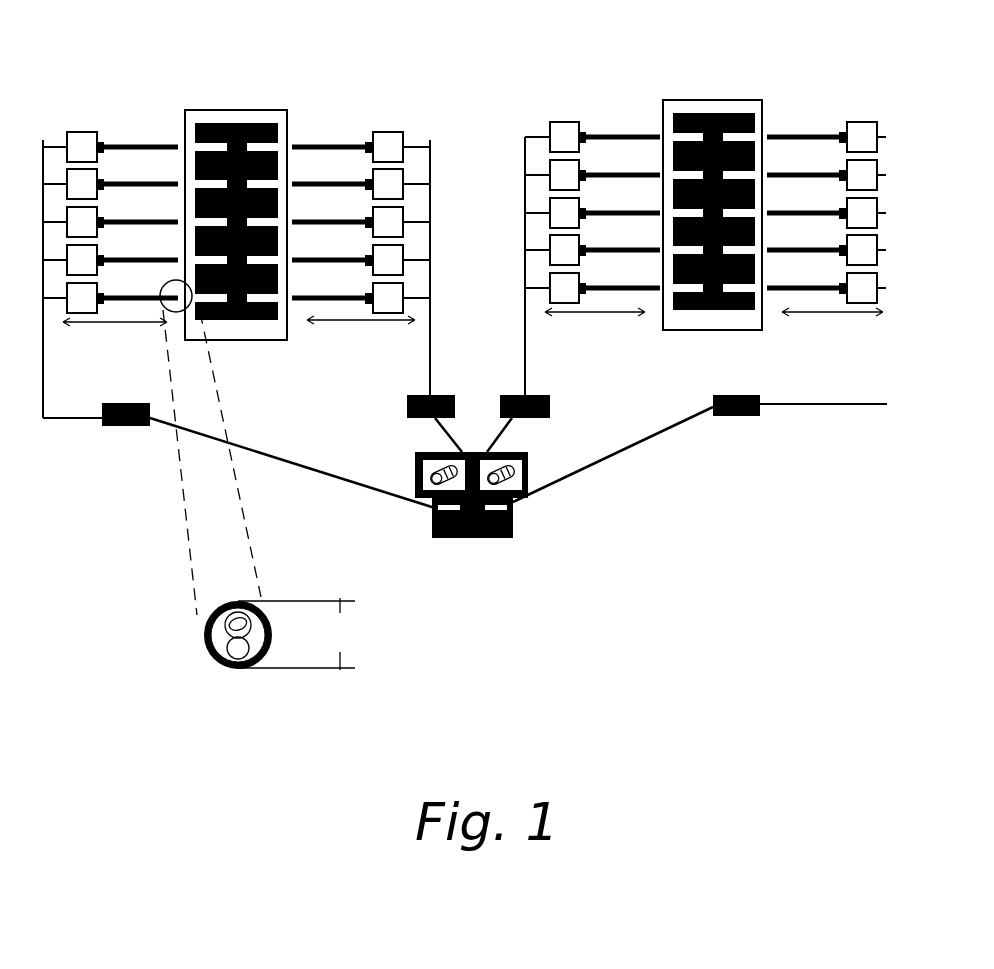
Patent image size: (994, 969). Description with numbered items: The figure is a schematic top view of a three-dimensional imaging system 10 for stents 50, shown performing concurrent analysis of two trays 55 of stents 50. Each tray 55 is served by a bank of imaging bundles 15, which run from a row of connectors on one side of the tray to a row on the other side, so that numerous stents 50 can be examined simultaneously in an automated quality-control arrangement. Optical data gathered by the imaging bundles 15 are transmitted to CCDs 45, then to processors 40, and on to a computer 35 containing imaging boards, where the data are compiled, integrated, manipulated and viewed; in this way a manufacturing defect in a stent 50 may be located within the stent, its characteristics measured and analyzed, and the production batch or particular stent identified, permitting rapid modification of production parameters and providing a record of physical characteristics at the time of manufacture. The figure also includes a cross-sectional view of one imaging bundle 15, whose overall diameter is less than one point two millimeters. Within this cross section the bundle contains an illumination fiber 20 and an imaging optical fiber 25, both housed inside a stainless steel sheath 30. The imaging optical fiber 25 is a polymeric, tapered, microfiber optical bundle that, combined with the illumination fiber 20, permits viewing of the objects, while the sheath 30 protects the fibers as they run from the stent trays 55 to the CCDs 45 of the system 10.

The three-dimensional imaging system 10 is at (671, 46).
The imaging bundle 15 is at (137, 140).
The illumination fiber 20 is at (205, 630).
The imaging optical fiber 25 is at (217, 657).
The stainless steel sheath 30 is at (222, 630).
The computer 35 is at (432, 515).
The processor 40 is at (132, 427).
The CCD 45 is at (547, 128).
The stent 50 is at (287, 135).
The tray of stents 55 is at (190, 135).